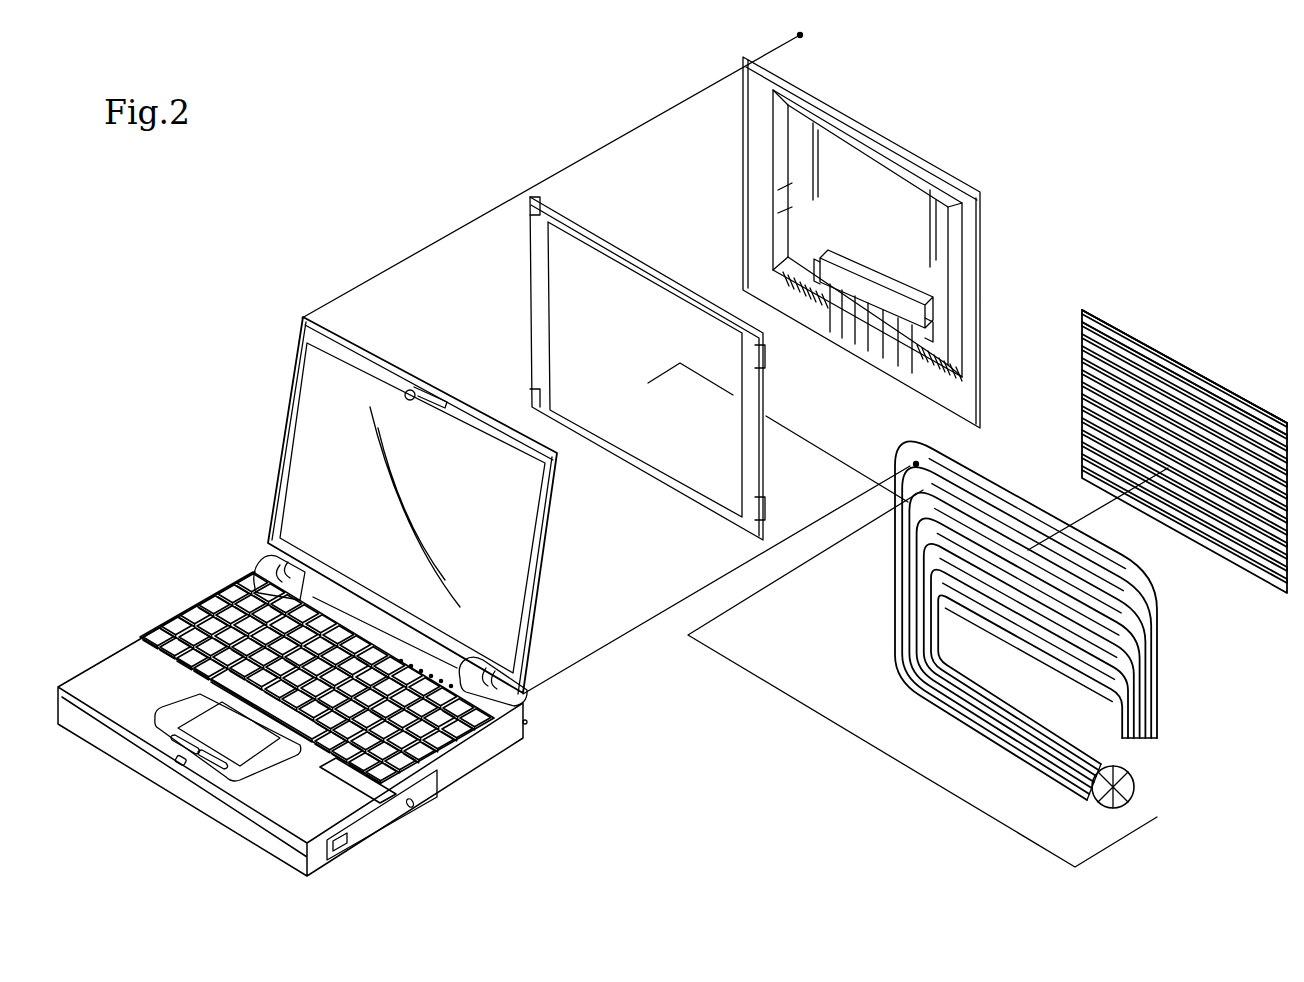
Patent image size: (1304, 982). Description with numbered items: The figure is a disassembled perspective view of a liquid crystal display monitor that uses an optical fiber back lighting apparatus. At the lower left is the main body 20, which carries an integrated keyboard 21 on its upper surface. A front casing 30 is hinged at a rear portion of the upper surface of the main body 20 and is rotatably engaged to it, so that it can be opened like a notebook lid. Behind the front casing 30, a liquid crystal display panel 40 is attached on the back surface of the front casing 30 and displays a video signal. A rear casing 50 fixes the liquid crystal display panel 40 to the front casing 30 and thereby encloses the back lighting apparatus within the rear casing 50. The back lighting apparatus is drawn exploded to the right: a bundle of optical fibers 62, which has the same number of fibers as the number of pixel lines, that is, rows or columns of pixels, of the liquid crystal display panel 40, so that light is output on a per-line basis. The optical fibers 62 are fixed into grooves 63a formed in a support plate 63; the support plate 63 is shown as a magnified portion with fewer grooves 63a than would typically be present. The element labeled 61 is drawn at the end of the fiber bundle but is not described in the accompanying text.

The main body 20 is at (98, 635).
The integrated keyboard 21 is at (197, 622).
The front casing 30 is at (271, 417).
The liquid crystal display panel 40 is at (517, 248).
The rear casing 50 is at (729, 122).
The pump 61 is at (1140, 786).
The optical fibers 62 is at (1162, 680).
The support plate 63 is at (1173, 352).
The grooves 63a is at (1080, 352).